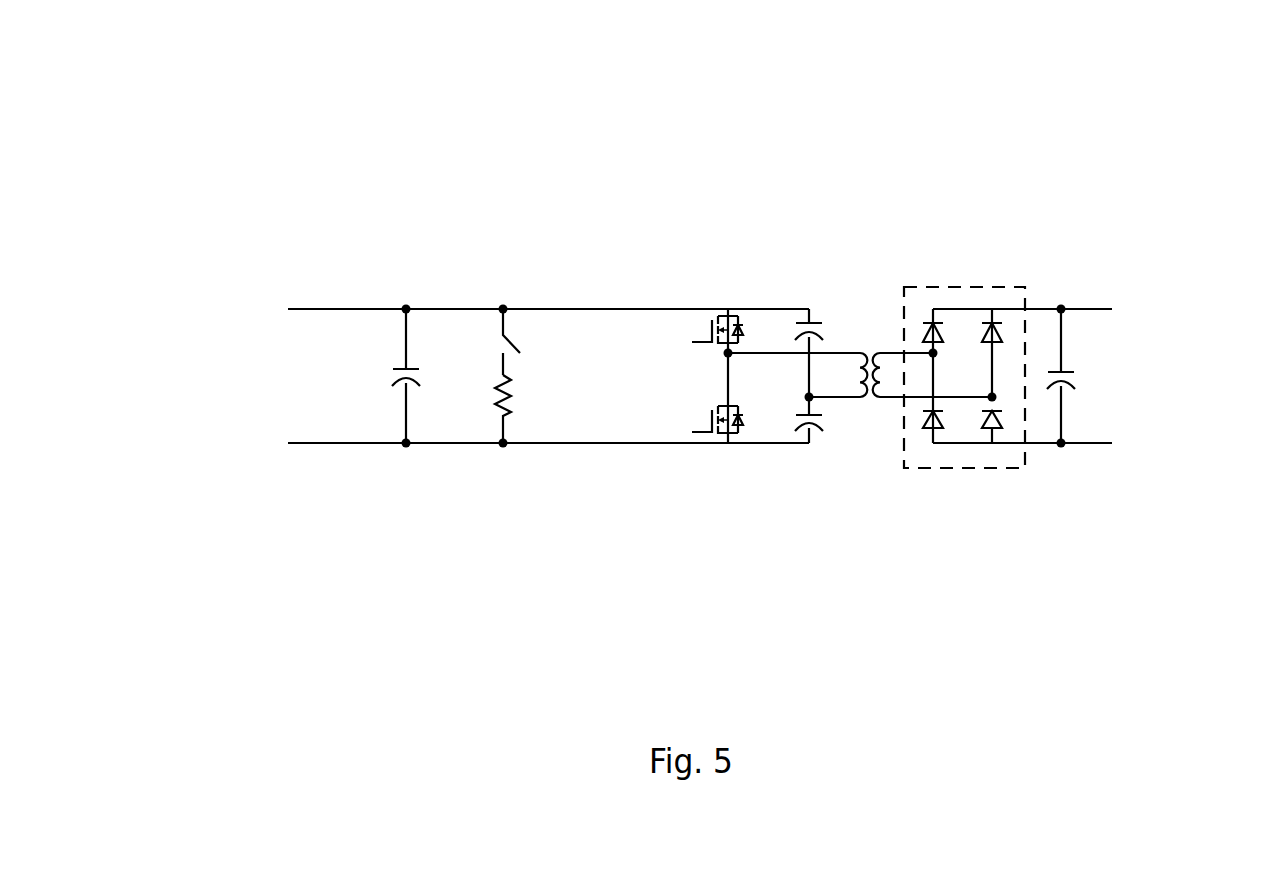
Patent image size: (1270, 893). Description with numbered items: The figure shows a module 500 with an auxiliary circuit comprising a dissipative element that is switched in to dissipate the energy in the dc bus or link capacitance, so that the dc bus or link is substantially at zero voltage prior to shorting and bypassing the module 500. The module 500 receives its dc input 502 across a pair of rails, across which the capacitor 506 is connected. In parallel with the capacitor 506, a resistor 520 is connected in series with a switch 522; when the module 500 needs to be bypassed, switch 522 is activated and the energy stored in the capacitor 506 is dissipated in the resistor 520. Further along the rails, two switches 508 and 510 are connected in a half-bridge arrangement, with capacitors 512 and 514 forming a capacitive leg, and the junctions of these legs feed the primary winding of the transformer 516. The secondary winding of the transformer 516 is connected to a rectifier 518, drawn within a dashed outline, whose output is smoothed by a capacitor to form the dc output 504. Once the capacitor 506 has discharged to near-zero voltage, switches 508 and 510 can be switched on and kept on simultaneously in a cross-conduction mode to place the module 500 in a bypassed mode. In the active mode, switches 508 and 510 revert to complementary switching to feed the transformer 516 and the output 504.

The module 500 is at (513, 142).
The DC input 502 is at (268, 373).
The output 504 is at (1143, 345).
The capacitor 506 is at (390, 387).
The switch 508 is at (700, 328).
The switch 510 is at (750, 422).
The upper resonant capacitor 512 is at (795, 325).
The lower resonant capacitor 514 is at (823, 432).
The transformer 516 is at (868, 342).
The rectifier bridge 518 is at (962, 283).
The resistor 520 is at (513, 413).
The switch 522 is at (515, 333).